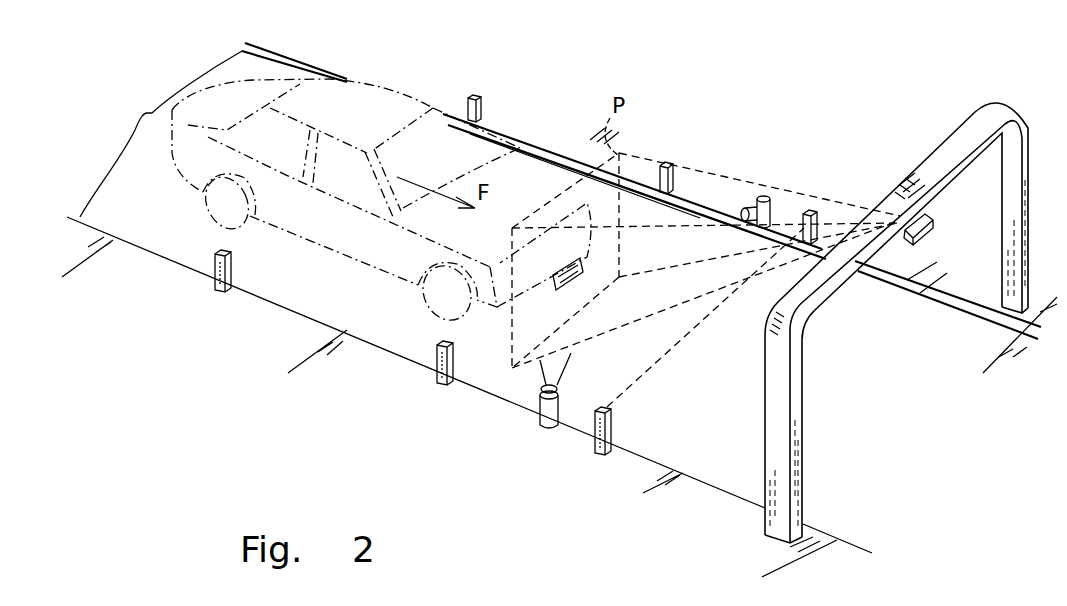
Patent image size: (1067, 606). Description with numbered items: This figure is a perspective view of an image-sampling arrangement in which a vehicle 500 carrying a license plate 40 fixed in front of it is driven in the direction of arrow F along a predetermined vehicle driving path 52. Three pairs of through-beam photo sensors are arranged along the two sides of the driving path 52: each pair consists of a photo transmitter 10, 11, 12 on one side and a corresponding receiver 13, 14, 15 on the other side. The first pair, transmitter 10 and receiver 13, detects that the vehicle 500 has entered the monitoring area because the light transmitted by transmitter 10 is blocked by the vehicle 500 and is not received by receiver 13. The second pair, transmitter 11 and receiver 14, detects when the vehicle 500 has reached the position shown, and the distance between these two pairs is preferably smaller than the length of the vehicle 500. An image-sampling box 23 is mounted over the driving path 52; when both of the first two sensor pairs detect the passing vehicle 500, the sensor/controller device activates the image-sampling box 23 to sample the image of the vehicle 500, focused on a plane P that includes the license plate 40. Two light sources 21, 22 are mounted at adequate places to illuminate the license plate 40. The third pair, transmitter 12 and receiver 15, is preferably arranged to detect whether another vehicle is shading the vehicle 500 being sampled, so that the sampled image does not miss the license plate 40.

The photo transmitter 10 is at (245, 275).
The photo transmitter 11 is at (462, 384).
The photo transmitter 12 is at (612, 428).
The receiver 13 is at (466, 108).
The receiver 14 is at (652, 172).
The receiver 15 is at (798, 215).
The light source 21 is at (538, 398).
The light source 22 is at (745, 205).
The image-sampling box 23 is at (938, 228).
The license plate 40 is at (556, 288).
The vehicle driving path 52 is at (137, 116).
The vehicle 500 is at (372, 92).